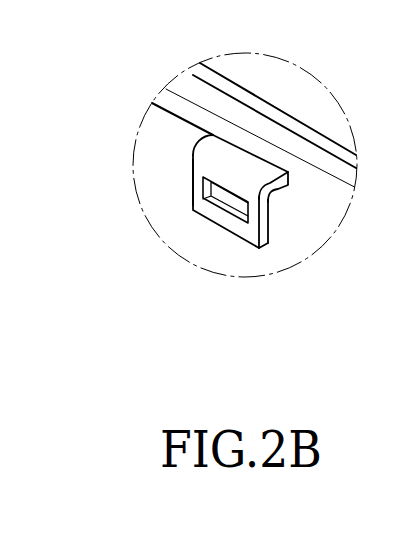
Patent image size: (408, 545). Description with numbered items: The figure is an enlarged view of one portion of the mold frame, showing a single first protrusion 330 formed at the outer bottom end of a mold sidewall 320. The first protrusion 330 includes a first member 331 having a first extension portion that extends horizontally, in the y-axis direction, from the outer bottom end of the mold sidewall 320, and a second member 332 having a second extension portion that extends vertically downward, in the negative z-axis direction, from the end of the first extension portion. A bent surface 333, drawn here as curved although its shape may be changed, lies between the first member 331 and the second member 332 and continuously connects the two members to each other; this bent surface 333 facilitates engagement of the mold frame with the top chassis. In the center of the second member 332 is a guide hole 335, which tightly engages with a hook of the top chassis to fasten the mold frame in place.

The mold sidewall 320 is at (166, 90).
The first member 331 is at (218, 138).
The first protrusion 330 is at (182, 195).
The second member 332 is at (193, 174).
The bent surface 333 is at (257, 189).
The guide hole 335 is at (217, 204).